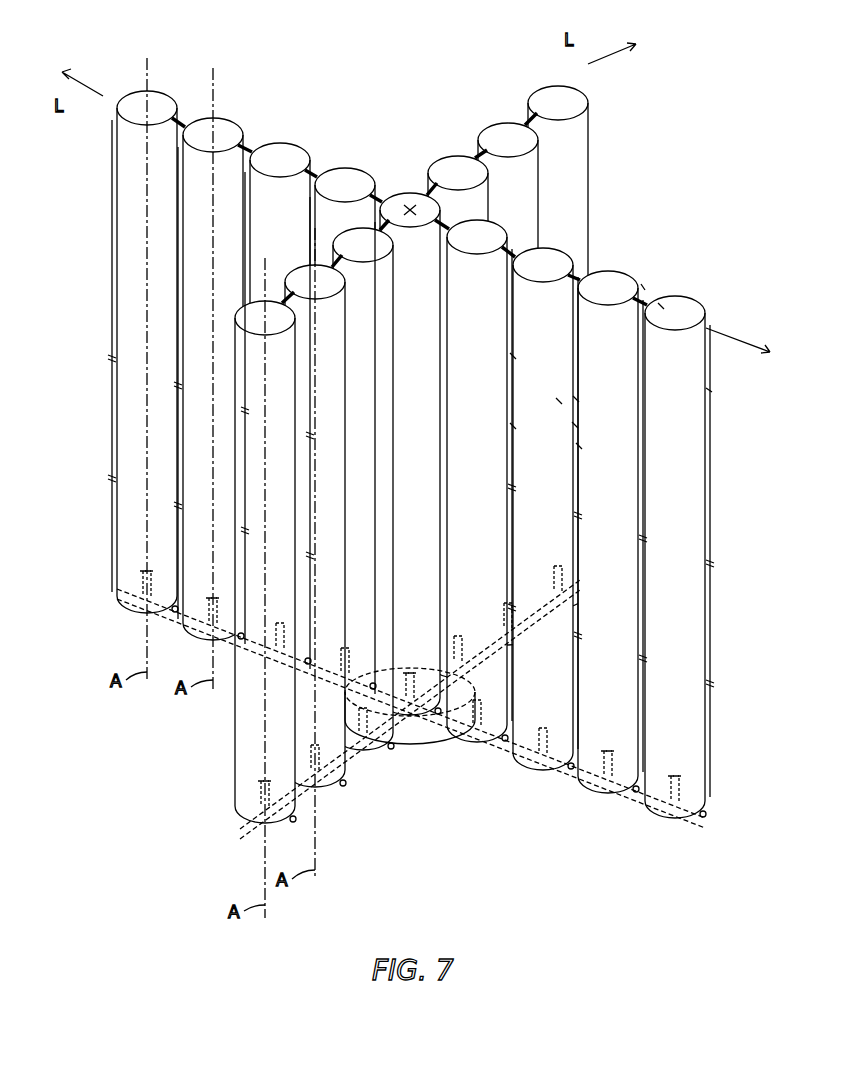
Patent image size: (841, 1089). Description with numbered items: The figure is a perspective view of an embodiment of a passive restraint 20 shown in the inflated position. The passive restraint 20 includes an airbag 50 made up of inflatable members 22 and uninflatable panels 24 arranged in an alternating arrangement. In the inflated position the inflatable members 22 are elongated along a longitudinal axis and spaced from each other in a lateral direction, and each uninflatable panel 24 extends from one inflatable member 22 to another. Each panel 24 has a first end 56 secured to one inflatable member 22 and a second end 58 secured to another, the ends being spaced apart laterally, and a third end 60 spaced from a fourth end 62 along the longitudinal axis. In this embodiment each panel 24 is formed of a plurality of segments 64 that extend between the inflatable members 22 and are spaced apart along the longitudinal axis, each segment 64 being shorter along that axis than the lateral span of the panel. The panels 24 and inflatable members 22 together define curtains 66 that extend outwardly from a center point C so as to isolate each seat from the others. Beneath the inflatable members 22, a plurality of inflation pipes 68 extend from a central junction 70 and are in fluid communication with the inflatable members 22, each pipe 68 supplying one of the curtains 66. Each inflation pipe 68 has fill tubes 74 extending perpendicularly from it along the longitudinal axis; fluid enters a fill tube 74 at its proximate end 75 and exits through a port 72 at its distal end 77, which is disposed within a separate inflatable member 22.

The passive restraint 20 is at (650, 91).
The inflatable members 22 is at (147, 92).
The uninflatable panels 24 is at (178, 145).
The airbag 50 is at (707, 389).
The first end 56 is at (642, 285).
The second end 58 is at (660, 303).
The third end 60 is at (512, 355).
The fourth end 62 is at (512, 424).
The segments 64 is at (500, 356).
The curtain 66 is at (283, 148).
The inflation pipes 68 is at (192, 612).
The central junction 70 is at (410, 745).
The ports 72 is at (145, 572).
The fill tubes 74 is at (140, 572).
The proximate end 75 is at (152, 600).
The distal end 77 is at (148, 571).
The center point C is at (410, 206).